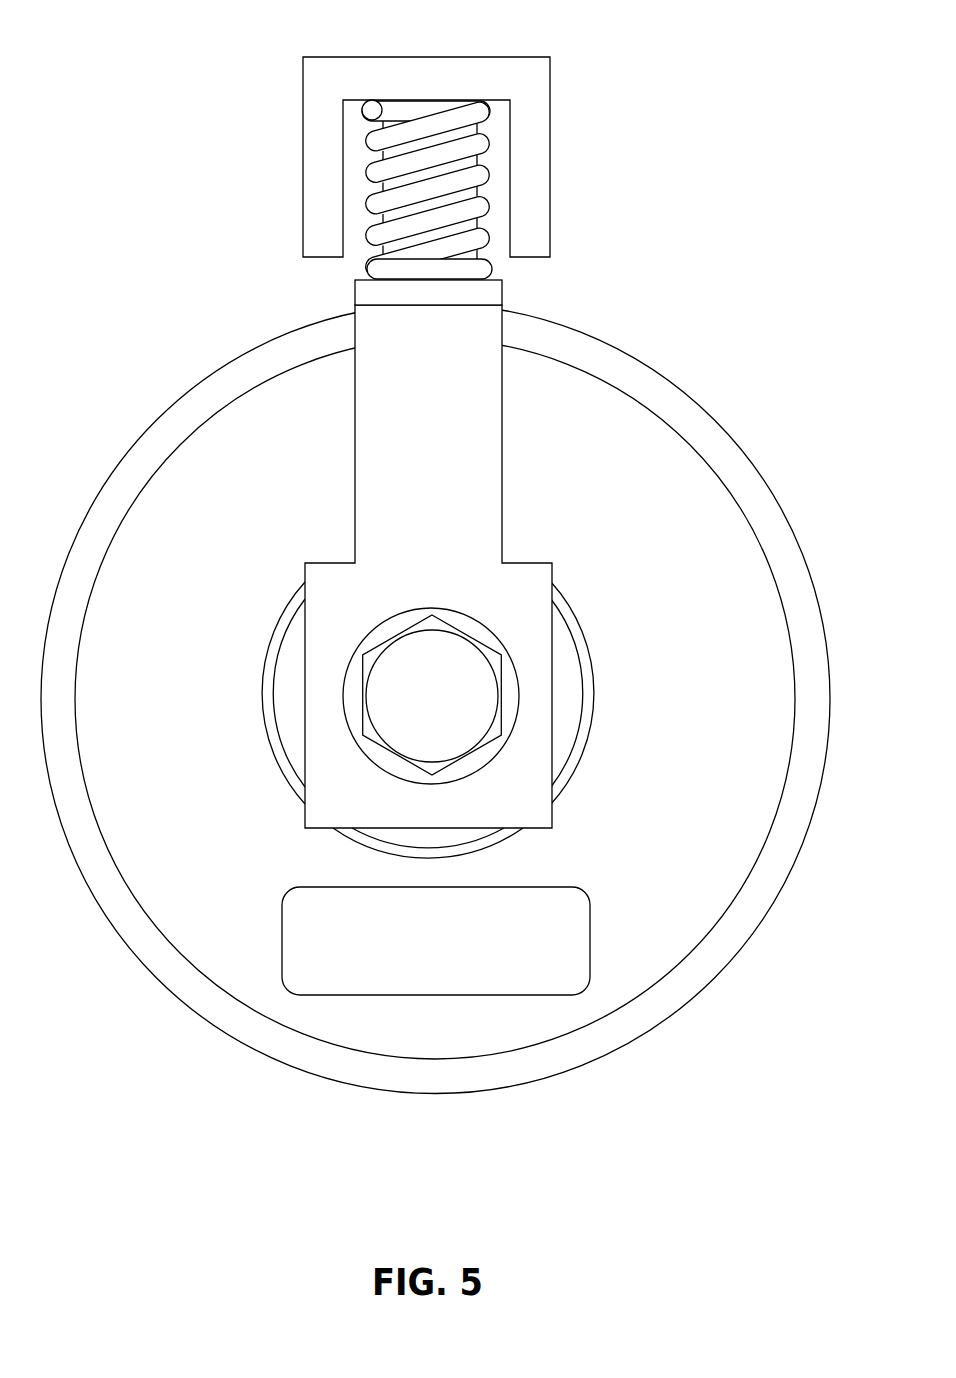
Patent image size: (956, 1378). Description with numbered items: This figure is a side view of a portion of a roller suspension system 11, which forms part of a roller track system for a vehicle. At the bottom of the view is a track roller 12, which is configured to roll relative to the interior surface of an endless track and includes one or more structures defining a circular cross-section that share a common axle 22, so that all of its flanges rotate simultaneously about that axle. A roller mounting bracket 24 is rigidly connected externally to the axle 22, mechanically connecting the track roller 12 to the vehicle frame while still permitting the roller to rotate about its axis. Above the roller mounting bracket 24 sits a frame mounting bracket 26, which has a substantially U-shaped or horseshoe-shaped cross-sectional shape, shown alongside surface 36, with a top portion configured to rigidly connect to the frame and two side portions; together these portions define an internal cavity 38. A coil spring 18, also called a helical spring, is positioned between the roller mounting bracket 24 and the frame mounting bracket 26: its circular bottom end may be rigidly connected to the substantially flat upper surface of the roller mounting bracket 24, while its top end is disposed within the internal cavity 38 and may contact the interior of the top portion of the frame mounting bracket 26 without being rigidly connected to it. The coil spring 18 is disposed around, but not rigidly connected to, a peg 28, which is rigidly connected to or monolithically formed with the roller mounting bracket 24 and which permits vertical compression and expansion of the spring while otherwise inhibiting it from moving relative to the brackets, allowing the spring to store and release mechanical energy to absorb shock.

The roller suspension system 11 is at (714, 108).
The track roller 12 is at (470, 1032).
The coil spring 18 is at (492, 268).
The axle 22 is at (422, 684).
The roller mounting bracket 24 is at (412, 370).
The frame mounting bracket 26 is at (550, 127).
The peg 28 is at (393, 150).
The surface 36 is at (444, 92).
The internal cavity 38 is at (355, 188).